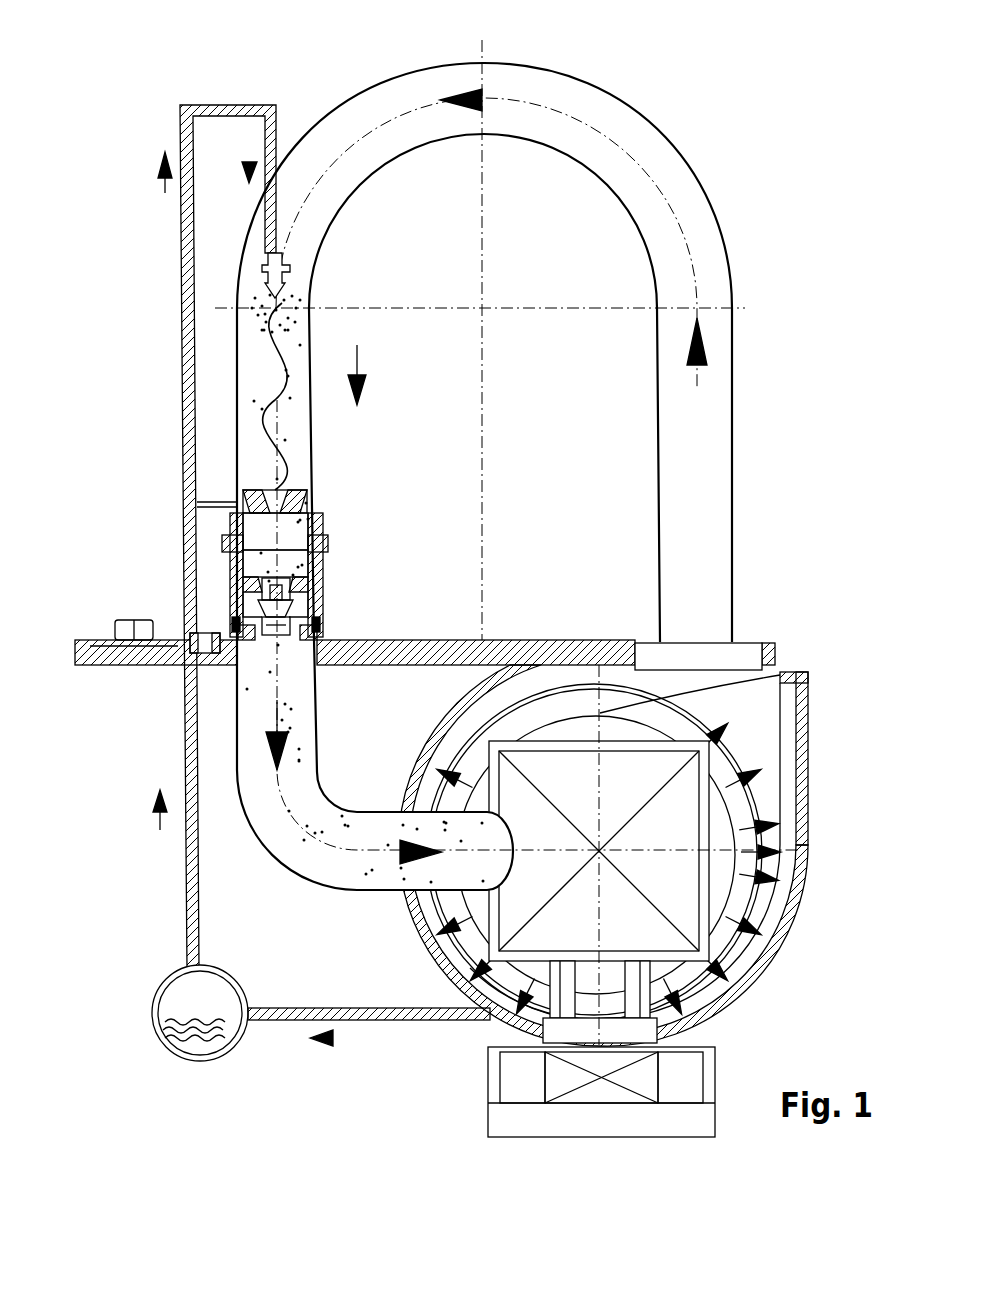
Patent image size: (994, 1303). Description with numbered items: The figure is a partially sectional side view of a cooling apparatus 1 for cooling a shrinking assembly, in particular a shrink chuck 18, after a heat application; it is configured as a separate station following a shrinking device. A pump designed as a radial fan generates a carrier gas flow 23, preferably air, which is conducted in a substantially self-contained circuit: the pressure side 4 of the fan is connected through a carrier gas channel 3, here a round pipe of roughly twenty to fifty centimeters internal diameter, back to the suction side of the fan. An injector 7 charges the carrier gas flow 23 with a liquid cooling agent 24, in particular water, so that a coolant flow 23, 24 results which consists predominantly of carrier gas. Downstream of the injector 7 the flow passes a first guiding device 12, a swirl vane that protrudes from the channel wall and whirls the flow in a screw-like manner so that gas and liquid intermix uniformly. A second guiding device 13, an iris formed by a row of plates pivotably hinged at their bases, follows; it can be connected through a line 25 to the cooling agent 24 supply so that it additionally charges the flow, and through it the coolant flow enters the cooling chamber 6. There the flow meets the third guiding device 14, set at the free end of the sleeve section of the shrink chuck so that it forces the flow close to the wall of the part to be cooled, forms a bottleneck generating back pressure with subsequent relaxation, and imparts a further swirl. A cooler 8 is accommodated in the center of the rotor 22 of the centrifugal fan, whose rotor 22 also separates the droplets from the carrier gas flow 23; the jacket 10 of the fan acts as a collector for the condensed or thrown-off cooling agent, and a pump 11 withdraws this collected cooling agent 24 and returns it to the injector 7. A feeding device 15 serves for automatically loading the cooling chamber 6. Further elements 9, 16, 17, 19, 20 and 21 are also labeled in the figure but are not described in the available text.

The cooling apparatus 1 is at (735, 180).
The carrier gas channel 3 is at (720, 488).
The pressure side 4 is at (736, 658).
The cooling chamber 6 is at (285, 556).
The injector 7 is at (290, 262).
The cooler 8 is at (608, 803).
The motor 9 is at (488, 1083).
The jacket 10 is at (790, 945).
The pump for the cooling agent 11 is at (182, 1020).
The first guiding device 12 is at (300, 345).
The second guiding device 13 is at (288, 492).
The third guiding device 14 is at (312, 574).
The feeding device 15 is at (195, 652).
The fastening element 16 is at (318, 628).
The supply duct wall 17 is at (188, 882).
The shrink chuck 18 is at (286, 602).
The nozzle insert 19 is at (318, 592).
The blower housing 20 is at (508, 655).
The inner ring 21 is at (687, 887).
The rotor 22 is at (748, 752).
The carrier gas flow 23 is at (500, 68).
The cooling agent 24 is at (249, 162).
The line 25 is at (217, 500).